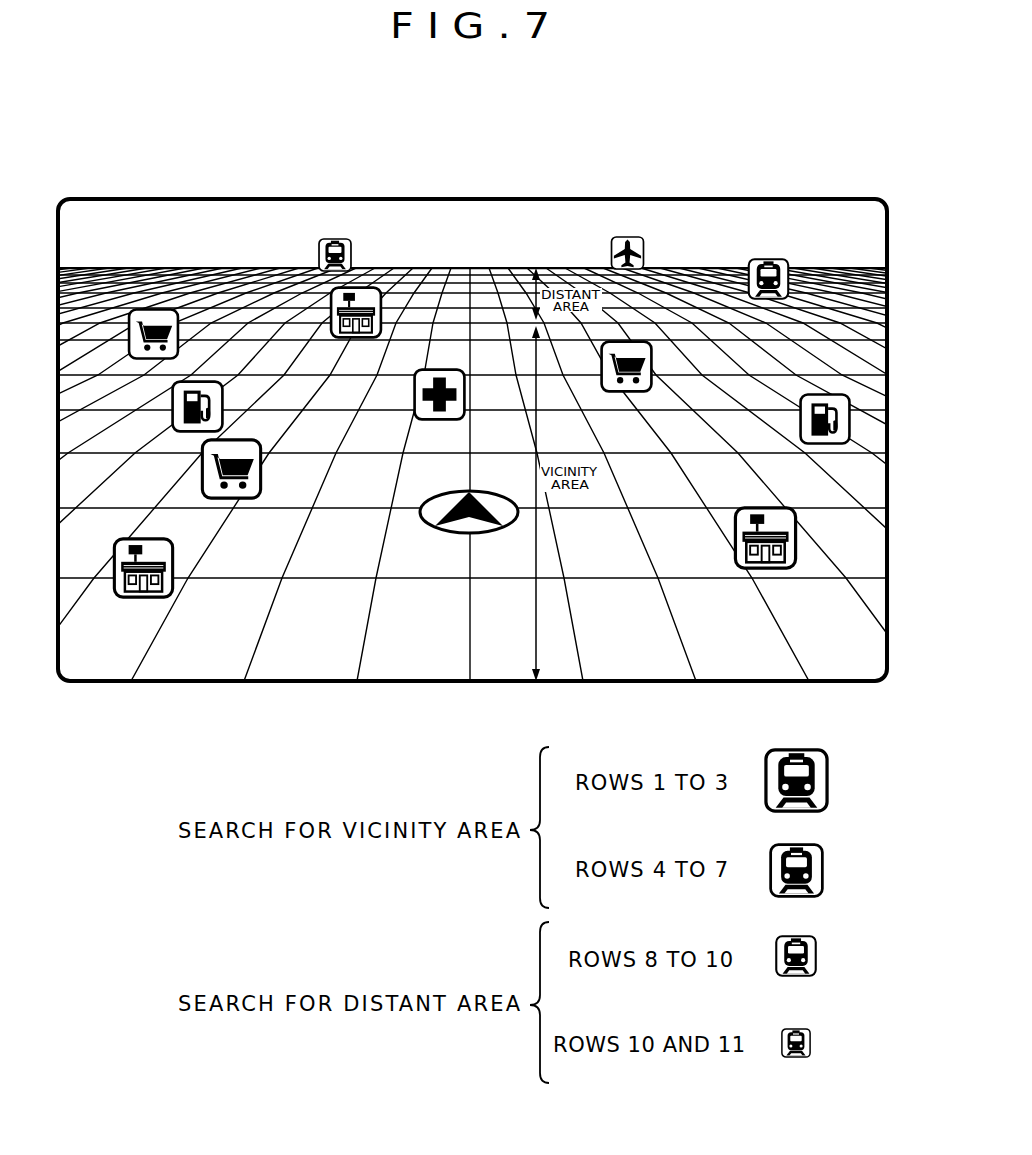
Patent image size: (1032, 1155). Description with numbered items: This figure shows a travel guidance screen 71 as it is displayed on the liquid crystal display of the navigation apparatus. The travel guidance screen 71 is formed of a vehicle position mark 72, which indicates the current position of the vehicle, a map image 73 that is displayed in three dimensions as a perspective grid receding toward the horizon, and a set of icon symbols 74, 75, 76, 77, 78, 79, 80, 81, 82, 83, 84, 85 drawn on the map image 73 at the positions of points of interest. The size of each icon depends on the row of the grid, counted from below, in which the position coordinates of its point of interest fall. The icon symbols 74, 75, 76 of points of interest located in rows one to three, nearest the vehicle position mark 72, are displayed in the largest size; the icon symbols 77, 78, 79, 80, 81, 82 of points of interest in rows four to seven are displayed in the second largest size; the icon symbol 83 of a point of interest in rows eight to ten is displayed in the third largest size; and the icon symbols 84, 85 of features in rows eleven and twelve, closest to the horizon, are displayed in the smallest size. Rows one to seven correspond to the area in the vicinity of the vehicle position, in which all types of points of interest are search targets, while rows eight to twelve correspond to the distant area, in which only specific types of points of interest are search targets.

The travel guidance screen 71 is at (772, 198).
The vehicle position mark 72 is at (437, 527).
The map image 73 is at (325, 666).
The icon symbol 74 is at (177, 553).
The icon symbol 75 is at (778, 506).
The icon symbol 76 is at (263, 473).
The icon symbol 77 is at (225, 399).
The icon symbol 78 is at (450, 422).
The icon symbol 79 is at (653, 353).
The icon symbol 80 is at (812, 393).
The icon symbol 81 is at (152, 360).
The icon symbol 82 is at (366, 286).
The icon symbol 83 is at (766, 258).
The icon symbol 84 is at (334, 240).
The icon symbol 85 is at (627, 240).